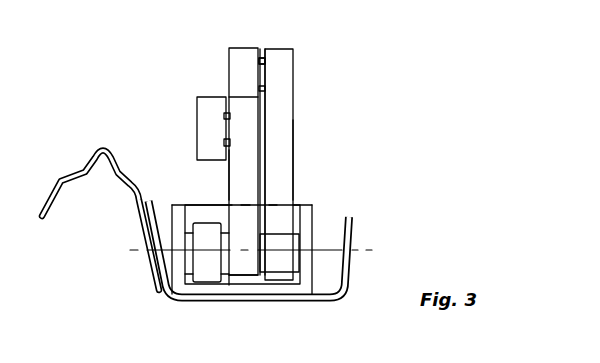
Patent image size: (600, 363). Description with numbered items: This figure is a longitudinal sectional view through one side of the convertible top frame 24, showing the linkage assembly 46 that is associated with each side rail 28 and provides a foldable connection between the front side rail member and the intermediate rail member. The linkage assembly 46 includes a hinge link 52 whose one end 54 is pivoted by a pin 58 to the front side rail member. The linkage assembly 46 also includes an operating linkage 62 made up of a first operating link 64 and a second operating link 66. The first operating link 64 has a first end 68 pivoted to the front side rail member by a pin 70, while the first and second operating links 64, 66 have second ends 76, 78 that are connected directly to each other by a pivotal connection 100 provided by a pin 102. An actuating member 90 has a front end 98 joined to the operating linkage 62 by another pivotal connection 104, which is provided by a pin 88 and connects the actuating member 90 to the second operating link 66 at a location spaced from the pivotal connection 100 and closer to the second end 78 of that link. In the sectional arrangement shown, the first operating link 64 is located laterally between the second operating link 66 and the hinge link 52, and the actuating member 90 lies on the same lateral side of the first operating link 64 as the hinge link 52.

The convertible top frame 24 is at (300, 84).
The side rail 28 is at (357, 226).
The linkage assembly 46 is at (300, 111).
The hinge link 52 is at (184, 277).
The end of hinge link 54 is at (212, 267).
The pin 58 is at (188, 228).
The operating linkage 62 is at (268, 50).
The first operating link 64 is at (230, 173).
The second operating link 66 is at (279, 151).
The first end of first operating link 68 is at (256, 280).
The pin 70 is at (276, 233).
The second end of first operating link 76 is at (233, 48).
The second end of second operating link 78 is at (296, 57).
The pin 88 is at (222, 123).
The actuating member 90 is at (190, 107).
The front end of actuating member 98 is at (200, 108).
The pivotal connection 100 is at (270, 61).
The pin 102 is at (259, 61).
The pivotal connection 104 is at (222, 140).